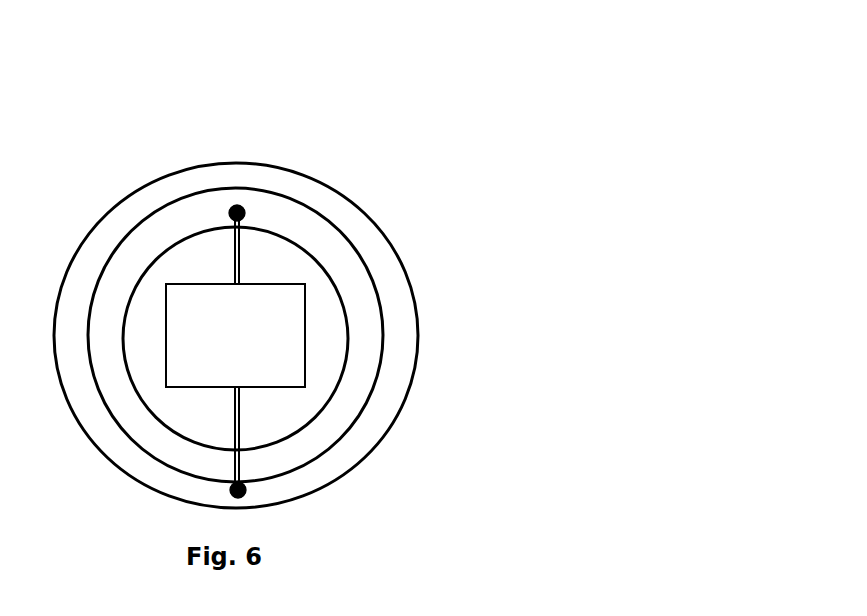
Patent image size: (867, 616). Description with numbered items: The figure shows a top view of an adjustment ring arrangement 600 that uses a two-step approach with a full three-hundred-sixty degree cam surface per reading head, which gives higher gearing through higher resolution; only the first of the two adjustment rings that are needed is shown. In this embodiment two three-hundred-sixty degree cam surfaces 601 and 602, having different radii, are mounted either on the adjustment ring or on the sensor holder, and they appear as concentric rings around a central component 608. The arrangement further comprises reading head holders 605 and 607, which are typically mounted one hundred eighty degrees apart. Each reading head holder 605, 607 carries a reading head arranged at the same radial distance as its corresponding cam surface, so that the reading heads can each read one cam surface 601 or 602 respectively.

The transponder device 600 is at (536, 76).
The cam surface 601 is at (400, 300).
The cam surface 602 is at (330, 248).
The reading head holder 605 is at (242, 236).
The reading head holder 607 is at (233, 423).
The circuit block 608 is at (213, 284).